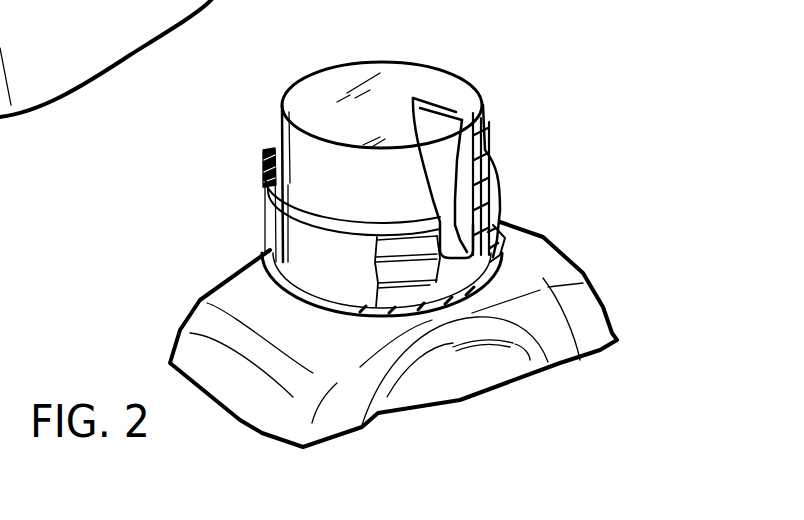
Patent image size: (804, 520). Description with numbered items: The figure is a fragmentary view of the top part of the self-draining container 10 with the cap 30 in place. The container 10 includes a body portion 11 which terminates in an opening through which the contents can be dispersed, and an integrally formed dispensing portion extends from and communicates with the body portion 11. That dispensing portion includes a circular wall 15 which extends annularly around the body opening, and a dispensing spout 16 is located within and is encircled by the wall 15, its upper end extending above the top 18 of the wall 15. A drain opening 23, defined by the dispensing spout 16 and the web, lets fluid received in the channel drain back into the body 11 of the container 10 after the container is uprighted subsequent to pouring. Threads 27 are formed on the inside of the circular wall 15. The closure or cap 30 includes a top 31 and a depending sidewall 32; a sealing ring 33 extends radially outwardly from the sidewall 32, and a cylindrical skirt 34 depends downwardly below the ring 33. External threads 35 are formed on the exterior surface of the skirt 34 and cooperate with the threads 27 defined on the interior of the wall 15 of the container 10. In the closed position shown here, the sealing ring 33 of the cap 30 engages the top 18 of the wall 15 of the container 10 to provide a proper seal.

The self-draining container 10 is at (240, 423).
The body portion 11 is at (446, 378).
The circular wall 15 is at (360, 282).
The dispensing spout 16 is at (453, 147).
The top of the wall 18 is at (272, 233).
The drain opening 23 is at (468, 273).
The threads 27 is at (497, 203).
The cap 30 is at (450, 60).
The top 31 is at (386, 110).
The sidewall 32 is at (388, 184).
The sealing ring 33 is at (262, 183).
The cylindrical skirt 34 is at (480, 192).
The external threads 35 is at (500, 224).